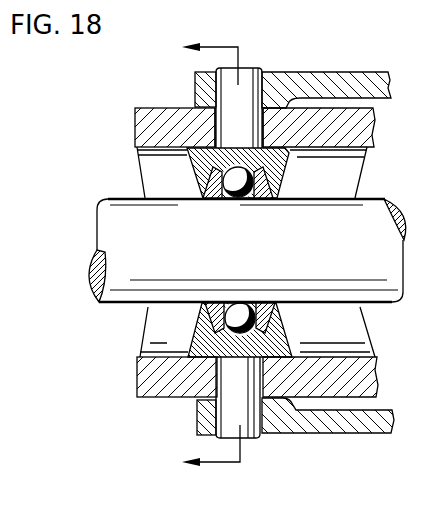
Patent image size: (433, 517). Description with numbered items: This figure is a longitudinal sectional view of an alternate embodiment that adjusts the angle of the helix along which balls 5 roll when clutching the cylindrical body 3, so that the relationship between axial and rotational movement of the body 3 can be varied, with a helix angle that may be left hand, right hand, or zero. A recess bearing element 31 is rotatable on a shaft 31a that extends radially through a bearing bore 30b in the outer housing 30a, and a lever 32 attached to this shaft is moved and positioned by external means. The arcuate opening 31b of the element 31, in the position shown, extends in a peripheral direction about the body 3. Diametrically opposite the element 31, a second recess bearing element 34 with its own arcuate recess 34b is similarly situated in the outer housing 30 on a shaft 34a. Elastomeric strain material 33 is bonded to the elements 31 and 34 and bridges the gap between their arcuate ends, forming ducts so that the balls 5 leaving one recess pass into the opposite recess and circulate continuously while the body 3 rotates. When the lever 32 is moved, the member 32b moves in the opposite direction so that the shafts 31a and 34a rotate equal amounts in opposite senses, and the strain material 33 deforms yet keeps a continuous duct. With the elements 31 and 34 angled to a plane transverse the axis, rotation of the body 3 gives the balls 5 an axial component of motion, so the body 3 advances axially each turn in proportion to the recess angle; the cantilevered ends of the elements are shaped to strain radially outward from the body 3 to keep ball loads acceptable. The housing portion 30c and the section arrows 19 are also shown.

The body 3 is at (384, 258).
The balls 5 is at (229, 196).
The section viewing direction arrows 19 is at (198, 256).
The outer housing 30 is at (228, 132).
The outer housing 30a is at (133, 128).
The bearing bore 30b is at (215, 133).
The housing shoulder 30c is at (138, 153).
The recess bearing element 31 is at (313, 158).
The shaft 31a is at (249, 83).
The arcuate opening 31b is at (188, 168).
The lever 32 is at (307, 72).
The member 32b is at (340, 433).
The elastomeric material 33 is at (281, 323).
The second recess bearing element 34 is at (187, 352).
The shaft 34a is at (229, 400).
The arcuate recess 34b is at (198, 336).